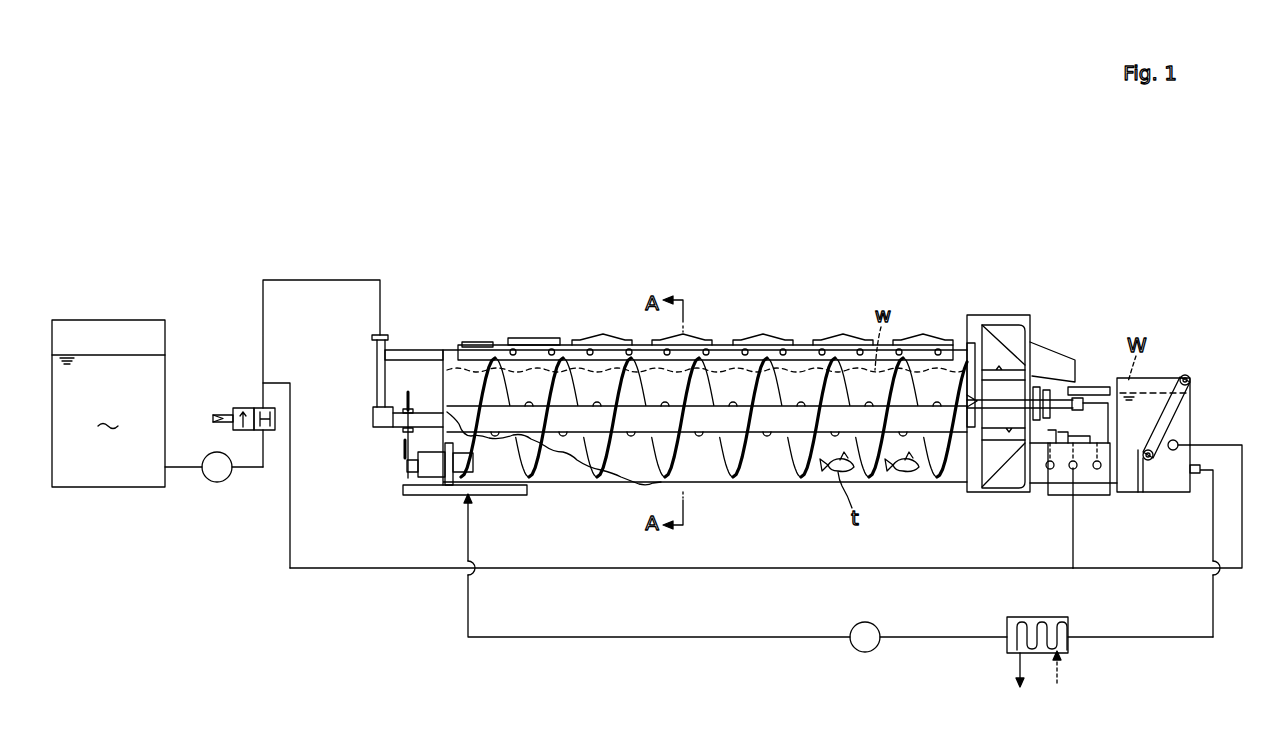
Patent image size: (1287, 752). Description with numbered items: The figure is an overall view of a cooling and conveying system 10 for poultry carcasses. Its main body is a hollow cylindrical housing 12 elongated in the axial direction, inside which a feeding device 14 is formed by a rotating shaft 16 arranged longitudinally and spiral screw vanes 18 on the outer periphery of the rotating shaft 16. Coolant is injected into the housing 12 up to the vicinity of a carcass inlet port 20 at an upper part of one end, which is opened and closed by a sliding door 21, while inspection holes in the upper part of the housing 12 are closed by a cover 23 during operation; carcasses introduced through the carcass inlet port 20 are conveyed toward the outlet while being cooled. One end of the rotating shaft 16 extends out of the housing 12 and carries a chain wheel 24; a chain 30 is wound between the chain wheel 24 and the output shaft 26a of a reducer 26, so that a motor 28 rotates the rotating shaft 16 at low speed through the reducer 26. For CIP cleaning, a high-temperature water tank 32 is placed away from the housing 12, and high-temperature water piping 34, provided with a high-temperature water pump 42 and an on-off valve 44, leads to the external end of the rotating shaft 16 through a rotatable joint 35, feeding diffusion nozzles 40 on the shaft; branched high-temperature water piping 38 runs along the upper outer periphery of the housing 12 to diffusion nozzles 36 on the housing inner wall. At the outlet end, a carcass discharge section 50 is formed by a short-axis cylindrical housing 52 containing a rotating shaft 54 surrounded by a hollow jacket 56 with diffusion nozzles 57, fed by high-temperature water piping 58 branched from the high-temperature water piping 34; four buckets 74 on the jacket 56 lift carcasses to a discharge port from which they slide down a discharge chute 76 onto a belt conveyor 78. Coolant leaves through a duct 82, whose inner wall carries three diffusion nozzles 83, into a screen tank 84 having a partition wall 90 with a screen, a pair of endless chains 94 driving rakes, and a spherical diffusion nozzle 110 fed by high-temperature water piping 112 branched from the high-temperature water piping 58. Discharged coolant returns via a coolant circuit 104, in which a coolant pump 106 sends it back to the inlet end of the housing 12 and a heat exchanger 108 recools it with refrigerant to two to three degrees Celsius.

The cooling and conveying system 10 is at (630, 240).
The housing 12 is at (716, 348).
The feeding device 14 is at (707, 461).
The rotating shaft 16 is at (778, 444).
The screw vanes 18 is at (825, 527).
The carcass inlet port 20 is at (477, 342).
The sliding door 21 is at (528, 338).
The cover 23 is at (598, 336).
The chain wheel 24 is at (404, 435).
The reducer 26 is at (433, 495).
The output shaft 26a is at (411, 477).
The motor 28 is at (473, 463).
The chain 30 is at (404, 467).
The high-temperature water tank 32 is at (108, 320).
The high-temperature water piping 34 is at (343, 280).
The rotatable joint 35 is at (373, 412).
The diffusion nozzles 36 is at (747, 340).
The high-temperature water piping 38 is at (415, 350).
The diffusion nozzles 40 is at (807, 400).
The high-temperature water pump 42 is at (214, 483).
The on-off valve 44 is at (248, 408).
The carcass discharge section 50 is at (975, 298).
The short-axis cylindrical housing 52 is at (1004, 402).
The rotating shaft 54 is at (987, 416).
The jacket 56 is at (999, 455).
The diffusion nozzles 57 is at (1016, 449).
The high-temperature water piping 58 is at (915, 570).
The buckets 74 is at (1030, 340).
The discharge chute 76 is at (1056, 354).
The belt conveyor 78 is at (1092, 386).
The duct 82 is at (1048, 488).
The diffusion nozzles 83 is at (1085, 470).
The screen tank 84 is at (1172, 339).
The partition wall 90 is at (1144, 470).
The endless chains 94 is at (1186, 398).
The coolant circuit 104 is at (1108, 642).
The coolant pump 106 is at (865, 654).
The heat exchanger 108 is at (1007, 646).
The spherical diffusion nozzle 110 is at (1176, 441).
The high-temperature water piping 112 is at (1105, 568).